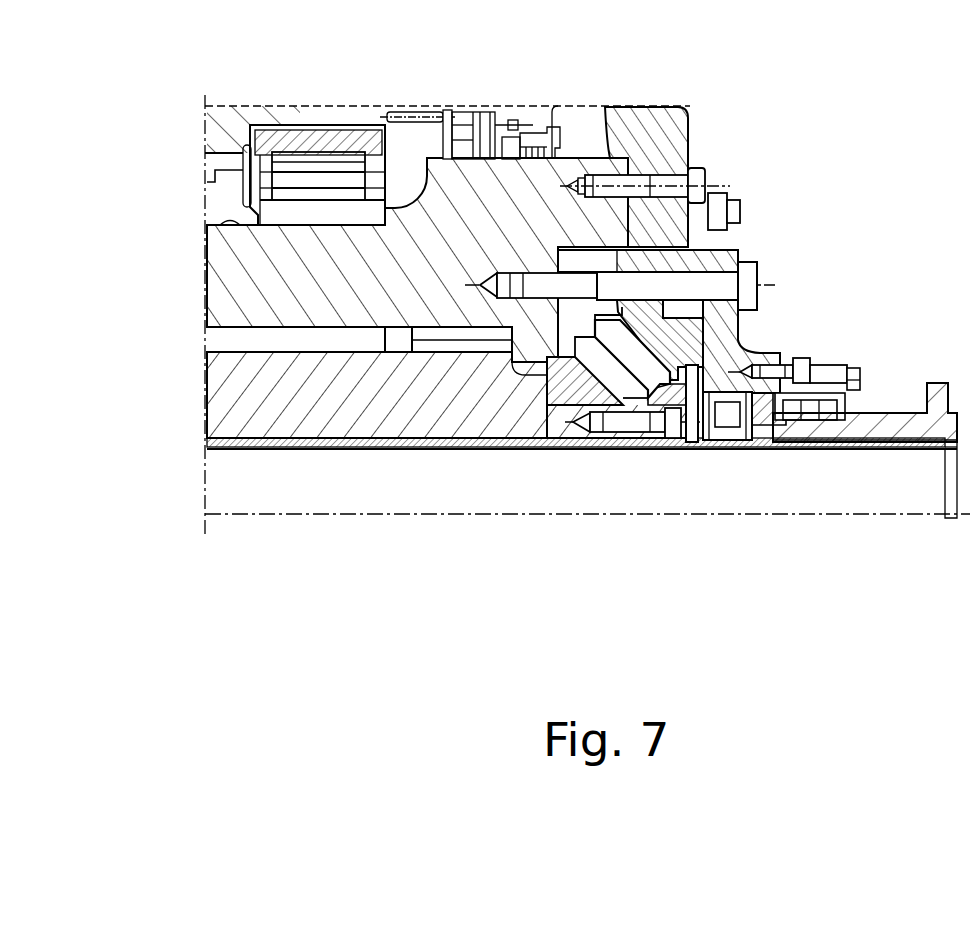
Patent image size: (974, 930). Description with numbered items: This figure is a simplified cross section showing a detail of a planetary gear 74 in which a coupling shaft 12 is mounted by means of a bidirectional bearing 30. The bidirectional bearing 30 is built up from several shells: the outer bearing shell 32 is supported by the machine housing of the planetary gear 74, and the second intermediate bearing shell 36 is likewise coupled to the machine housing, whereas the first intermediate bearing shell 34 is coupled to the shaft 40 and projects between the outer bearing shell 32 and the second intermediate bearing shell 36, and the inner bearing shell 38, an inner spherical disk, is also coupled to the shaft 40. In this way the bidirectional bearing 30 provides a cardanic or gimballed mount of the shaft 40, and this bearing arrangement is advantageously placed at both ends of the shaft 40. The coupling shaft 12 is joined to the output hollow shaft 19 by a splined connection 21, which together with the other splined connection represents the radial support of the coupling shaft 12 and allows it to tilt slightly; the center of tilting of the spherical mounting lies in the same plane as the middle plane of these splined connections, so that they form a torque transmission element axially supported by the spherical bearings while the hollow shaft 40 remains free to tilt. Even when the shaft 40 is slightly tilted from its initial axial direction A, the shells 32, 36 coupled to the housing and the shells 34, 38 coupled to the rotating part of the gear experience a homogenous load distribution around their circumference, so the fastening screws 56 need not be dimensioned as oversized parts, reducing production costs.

The coupling shaft 12 is at (236, 387).
The output hollow shaft 19 is at (480, 203).
The splined connection 21 is at (443, 332).
The bidirectional bearing 30 is at (800, 293).
The outer bearing shell 32 is at (694, 348).
The first intermediate bearing shell 34 is at (613, 335).
The second intermediate bearing shell 36 is at (630, 378).
The inner bearing shell 38 is at (558, 396).
The shaft 40 is at (727, 447).
The fastening screws 56 is at (684, 407).
The planetary gear 74 is at (706, 625).
The axial direction A is at (831, 517).